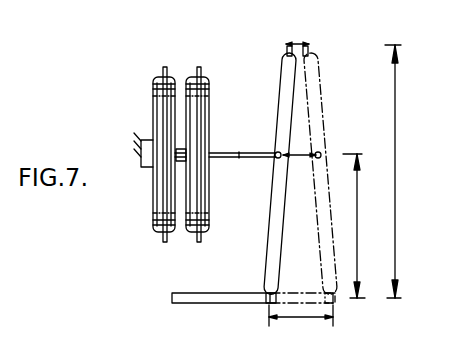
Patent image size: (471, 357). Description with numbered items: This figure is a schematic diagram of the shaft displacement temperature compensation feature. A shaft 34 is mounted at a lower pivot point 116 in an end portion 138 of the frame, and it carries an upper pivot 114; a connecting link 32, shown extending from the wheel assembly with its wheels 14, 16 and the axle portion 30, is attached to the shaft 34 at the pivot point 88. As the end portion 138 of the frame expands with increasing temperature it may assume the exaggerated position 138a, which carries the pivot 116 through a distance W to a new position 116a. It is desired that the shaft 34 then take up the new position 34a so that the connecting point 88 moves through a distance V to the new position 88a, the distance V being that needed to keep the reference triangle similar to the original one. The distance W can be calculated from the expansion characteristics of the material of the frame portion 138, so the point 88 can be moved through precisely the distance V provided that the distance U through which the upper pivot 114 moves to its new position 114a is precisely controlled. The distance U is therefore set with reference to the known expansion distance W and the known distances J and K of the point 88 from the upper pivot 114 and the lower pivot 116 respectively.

The wheel 14 is at (153, 223).
The wheel 16 is at (207, 241).
The axle hub 30 is at (223, 152).
The connecting link 32 is at (261, 158).
The shaft 34 is at (268, 232).
The new position of shaft 34a is at (333, 238).
The pivot point 88 is at (276, 151).
The new position of connecting point 88a is at (321, 152).
The upper pivot 114 is at (287, 50).
The new position of upper pivot 114a is at (312, 58).
The pivot point 116 is at (266, 292).
The new position of pivot 116a is at (335, 289).
The end portion of frame 138 is at (198, 304).
The expanded position of frame end portion 138a is at (343, 308).
The distance u U is at (298, 43).
The distance v V is at (303, 152).
The distance j J is at (358, 220).
The distance k K is at (396, 190).
The distance w W is at (293, 320).